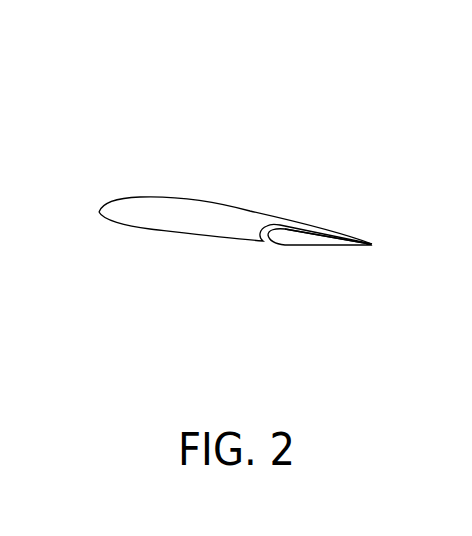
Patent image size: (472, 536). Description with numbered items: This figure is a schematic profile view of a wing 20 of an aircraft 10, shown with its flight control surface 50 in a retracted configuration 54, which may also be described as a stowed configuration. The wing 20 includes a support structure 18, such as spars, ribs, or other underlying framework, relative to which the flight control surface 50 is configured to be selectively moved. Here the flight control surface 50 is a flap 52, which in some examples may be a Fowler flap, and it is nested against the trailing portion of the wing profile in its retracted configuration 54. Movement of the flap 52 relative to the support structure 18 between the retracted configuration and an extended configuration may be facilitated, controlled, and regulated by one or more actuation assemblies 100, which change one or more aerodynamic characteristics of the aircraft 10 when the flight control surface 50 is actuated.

The aircraft 10 is at (100, 38).
The wing 20 is at (108, 96).
The actuation assembly 100 is at (185, 207).
The support structure 18 is at (235, 188).
The retracted configuration 54 is at (363, 191).
The flight control surface 50 is at (307, 258).
The flap 52 is at (347, 250).